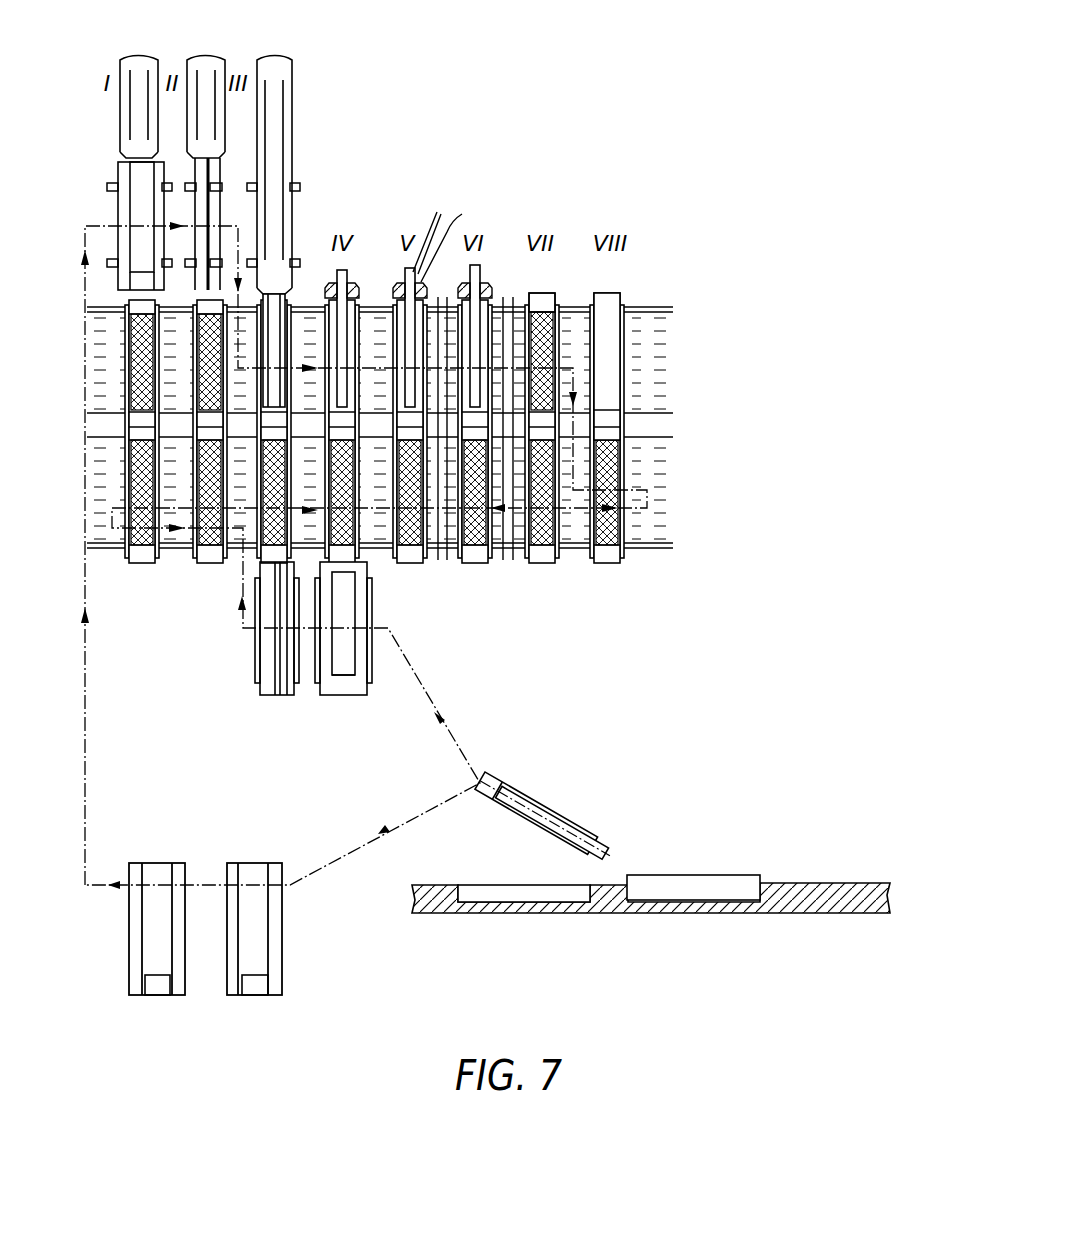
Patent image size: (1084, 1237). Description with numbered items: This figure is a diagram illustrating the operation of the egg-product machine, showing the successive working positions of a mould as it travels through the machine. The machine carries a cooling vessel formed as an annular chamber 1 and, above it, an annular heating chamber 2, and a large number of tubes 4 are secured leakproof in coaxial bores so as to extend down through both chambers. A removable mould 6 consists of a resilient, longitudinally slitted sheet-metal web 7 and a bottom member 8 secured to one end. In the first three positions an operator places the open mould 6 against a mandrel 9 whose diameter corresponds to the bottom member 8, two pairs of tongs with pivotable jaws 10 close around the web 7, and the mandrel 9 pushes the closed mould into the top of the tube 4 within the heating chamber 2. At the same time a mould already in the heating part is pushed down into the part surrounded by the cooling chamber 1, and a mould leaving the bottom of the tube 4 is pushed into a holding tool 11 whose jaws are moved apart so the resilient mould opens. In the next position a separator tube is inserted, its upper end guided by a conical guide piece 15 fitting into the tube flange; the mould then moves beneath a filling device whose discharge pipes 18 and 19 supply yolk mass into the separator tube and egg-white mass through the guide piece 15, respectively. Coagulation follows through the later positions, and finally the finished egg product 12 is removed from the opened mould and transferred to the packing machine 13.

The annular chamber 1 is at (108, 543).
The annular heating chamber 2 is at (105, 323).
The tube 4 is at (557, 320).
The mould 6 is at (602, 347).
The web 7 is at (123, 215).
The bottom member 8 is at (610, 408).
The mandrel 9 is at (203, 110).
The jaws 10 is at (110, 186).
The holding tool 11 is at (257, 663).
The egg product 12 is at (147, 502).
The packing machine 13 is at (607, 905).
The guide piece 15 is at (332, 286).
The discharge pipe 18 is at (424, 230).
The discharge pipe 19 is at (449, 234).